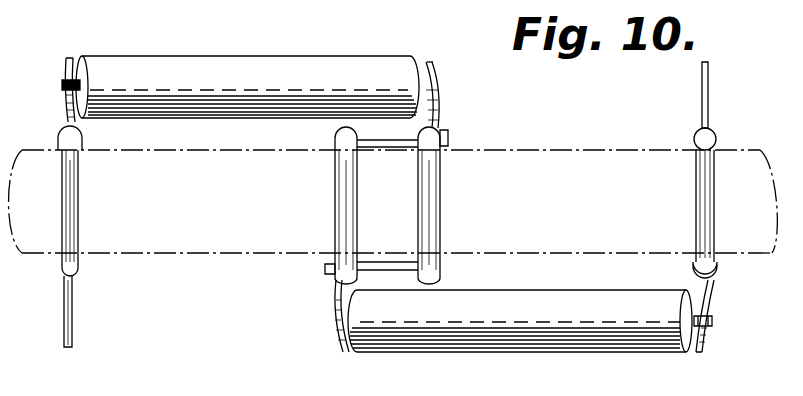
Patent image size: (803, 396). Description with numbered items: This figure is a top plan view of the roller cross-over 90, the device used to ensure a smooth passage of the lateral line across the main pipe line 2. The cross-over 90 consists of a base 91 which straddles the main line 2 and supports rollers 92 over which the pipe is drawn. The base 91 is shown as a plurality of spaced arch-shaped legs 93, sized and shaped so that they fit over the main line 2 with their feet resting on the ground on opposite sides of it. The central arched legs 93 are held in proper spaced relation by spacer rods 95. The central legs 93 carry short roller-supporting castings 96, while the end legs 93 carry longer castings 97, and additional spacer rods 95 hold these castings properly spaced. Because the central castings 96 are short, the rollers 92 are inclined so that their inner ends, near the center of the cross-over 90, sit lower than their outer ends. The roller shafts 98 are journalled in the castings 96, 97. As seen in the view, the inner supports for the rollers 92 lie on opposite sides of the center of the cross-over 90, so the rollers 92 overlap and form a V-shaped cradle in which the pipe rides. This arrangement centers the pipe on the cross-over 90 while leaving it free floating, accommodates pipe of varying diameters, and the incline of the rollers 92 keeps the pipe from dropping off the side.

The pipe 2 is at (524, 145).
The roller cross-over 90 is at (452, 138).
The base 91 is at (337, 170).
The rollers 92 is at (269, 58).
The arch-shaped legs 93 is at (79, 196).
The spacer rods 95 is at (376, 142).
The short roller-supporting castings 96 is at (432, 112).
The longer castings 97 is at (64, 95).
The roller shafts 98 is at (62, 85).